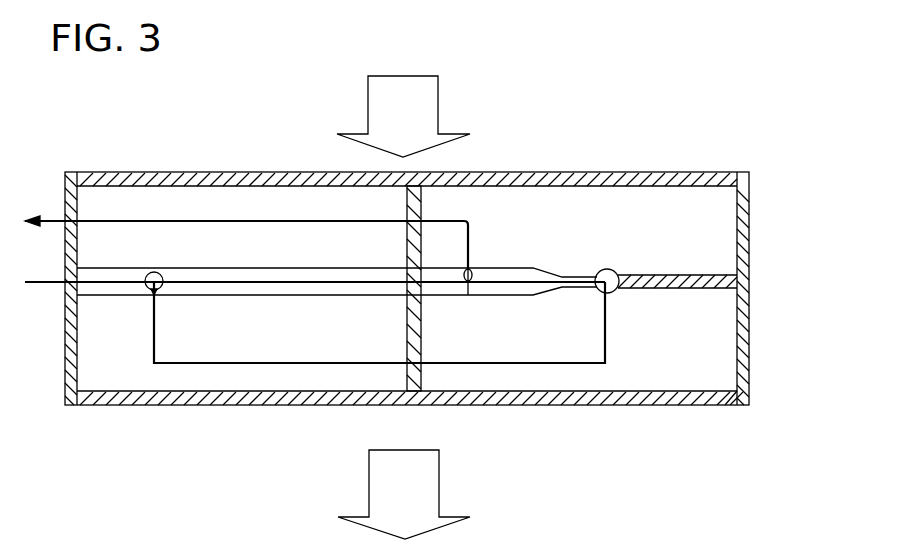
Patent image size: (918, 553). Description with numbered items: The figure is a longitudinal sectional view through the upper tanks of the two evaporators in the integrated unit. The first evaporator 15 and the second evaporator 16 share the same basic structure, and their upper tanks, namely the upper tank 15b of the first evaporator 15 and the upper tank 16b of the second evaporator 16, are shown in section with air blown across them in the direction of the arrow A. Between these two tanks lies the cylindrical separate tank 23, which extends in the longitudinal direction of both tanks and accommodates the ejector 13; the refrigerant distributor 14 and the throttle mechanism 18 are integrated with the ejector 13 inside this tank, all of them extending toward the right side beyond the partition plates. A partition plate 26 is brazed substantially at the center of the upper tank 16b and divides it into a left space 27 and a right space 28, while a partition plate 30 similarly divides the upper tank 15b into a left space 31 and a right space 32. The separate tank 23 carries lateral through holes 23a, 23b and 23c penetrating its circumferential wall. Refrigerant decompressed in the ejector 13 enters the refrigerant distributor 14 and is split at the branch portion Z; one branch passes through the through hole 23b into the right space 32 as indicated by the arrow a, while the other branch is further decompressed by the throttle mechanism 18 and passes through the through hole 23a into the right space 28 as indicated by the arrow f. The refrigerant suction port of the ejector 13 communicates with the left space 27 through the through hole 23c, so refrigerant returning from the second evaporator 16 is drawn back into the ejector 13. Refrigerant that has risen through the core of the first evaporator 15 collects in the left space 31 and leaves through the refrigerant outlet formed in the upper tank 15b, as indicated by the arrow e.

The ejector 13 is at (345, 209).
The refrigerant distributor 14 is at (562, 268).
The first evaporator 15 is at (435, 278).
The upper tank of the first evaporator 15b is at (660, 173).
The second evaporator 16 is at (755, 370).
The upper tank of the second evaporator 16b is at (715, 405).
The throttle mechanism 18 is at (588, 275).
The separate tank 23 is at (345, 209).
The through hole 23a is at (612, 270).
The through hole 23b is at (518, 268).
The through hole 23c is at (153, 271).
The partition plate 26 is at (422, 328).
The left space 27 is at (293, 333).
The right space 28 is at (680, 325).
The partition plate 30 is at (405, 204).
The left space 31 is at (265, 203).
The right space 32 is at (605, 217).
The arrow a is at (470, 270).
The arrow e is at (50, 220).
The arrow f is at (608, 328).
The branch portion Z is at (480, 300).
The arrow A is at (440, 103).